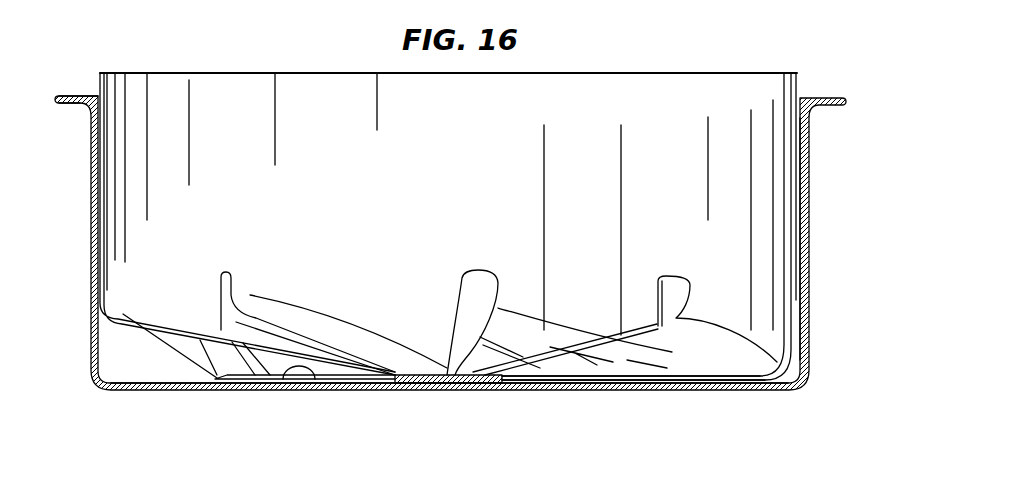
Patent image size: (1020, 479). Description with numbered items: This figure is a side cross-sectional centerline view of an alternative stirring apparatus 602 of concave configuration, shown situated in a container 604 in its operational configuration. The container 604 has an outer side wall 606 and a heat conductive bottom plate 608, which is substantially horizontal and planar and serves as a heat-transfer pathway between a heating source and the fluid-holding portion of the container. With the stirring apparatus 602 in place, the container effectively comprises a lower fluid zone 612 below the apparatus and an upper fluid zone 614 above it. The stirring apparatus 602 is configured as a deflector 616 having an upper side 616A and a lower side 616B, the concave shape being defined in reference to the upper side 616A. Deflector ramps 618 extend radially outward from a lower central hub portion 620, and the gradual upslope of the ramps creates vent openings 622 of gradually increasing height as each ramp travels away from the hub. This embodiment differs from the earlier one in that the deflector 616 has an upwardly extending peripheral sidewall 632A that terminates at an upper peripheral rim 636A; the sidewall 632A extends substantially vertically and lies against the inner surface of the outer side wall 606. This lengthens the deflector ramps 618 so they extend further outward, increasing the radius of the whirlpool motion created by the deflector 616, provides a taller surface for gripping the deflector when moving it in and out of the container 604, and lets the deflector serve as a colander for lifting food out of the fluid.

The stirring apparatus 602 is at (694, 362).
The container 604 is at (80, 95).
The outer side wall 606 is at (91, 302).
The heat conductive bottom plate 608 is at (289, 368).
The lower fluid zone 612 is at (152, 366).
The upper fluid zone 614 is at (163, 177).
The deflector 616 is at (793, 373).
The upper side 616A is at (372, 342).
The lower side 616B is at (547, 385).
The deflector ramps 618 is at (197, 338).
The central hub portion 620 is at (442, 372).
The vent openings 622 is at (186, 349).
The peripheral sidewall 632A is at (803, 312).
The upper peripheral rim 636A is at (797, 73).